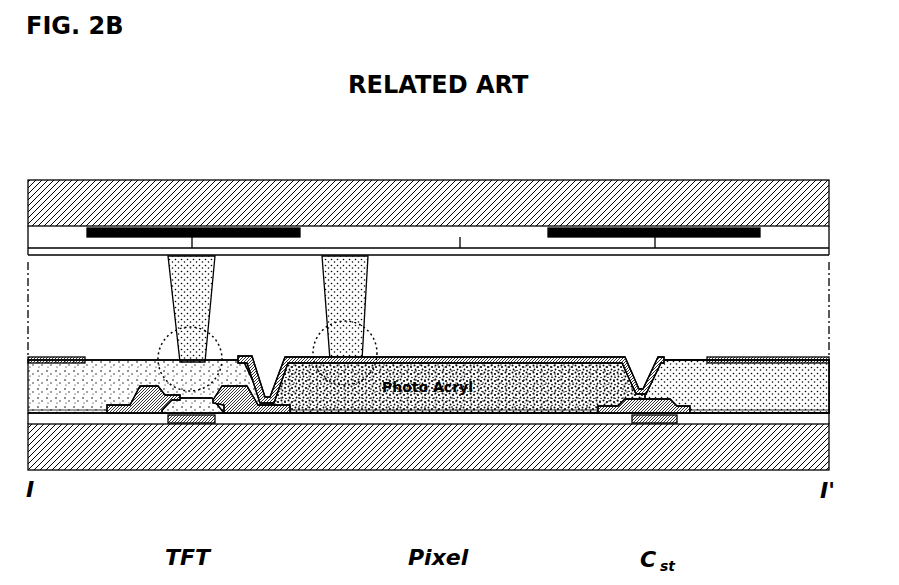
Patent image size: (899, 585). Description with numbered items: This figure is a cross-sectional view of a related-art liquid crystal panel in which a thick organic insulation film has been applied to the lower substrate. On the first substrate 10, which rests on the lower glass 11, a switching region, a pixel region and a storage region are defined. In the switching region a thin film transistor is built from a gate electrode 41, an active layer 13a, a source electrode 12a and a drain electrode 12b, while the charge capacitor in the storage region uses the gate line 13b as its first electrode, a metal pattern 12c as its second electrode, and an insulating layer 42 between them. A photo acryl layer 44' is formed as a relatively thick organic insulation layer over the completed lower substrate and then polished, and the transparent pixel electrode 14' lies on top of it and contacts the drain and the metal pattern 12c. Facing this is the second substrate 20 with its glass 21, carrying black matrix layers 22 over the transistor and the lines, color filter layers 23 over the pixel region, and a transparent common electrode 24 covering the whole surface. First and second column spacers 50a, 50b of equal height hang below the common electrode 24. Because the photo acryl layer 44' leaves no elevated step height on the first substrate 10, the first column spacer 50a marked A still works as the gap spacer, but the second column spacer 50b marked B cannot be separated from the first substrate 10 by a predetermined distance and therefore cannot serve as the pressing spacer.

The second substrate 20 is at (641, 180).
The upper glass substrate 21 is at (300, 186).
The black matrix layer 22 is at (197, 228).
The color filter layer 23 is at (460, 236).
The common electrode 24 is at (680, 255).
The first column spacer 50a is at (205, 290).
The second column spacer 50b is at (355, 297).
The pixel electrode 14' is at (428, 354).
The source electrode 12a is at (120, 413).
The drain electrode 12b is at (256, 413).
The metal pattern 12c is at (657, 400).
The active layer 13a is at (190, 423).
The gate line 13b is at (660, 423).
The gate electrode 41 is at (198, 411).
The insulating layer 42 is at (547, 415).
The photo acryl layer 44' is at (428, 434).
The lower glass substrate 11 is at (345, 470).
The first substrate 10 is at (476, 470).
The first column spacer region A is at (166, 352).
The second column spacer region B is at (319, 347).